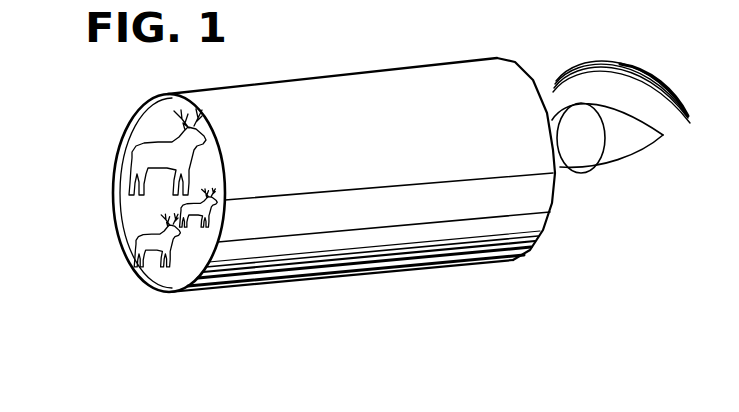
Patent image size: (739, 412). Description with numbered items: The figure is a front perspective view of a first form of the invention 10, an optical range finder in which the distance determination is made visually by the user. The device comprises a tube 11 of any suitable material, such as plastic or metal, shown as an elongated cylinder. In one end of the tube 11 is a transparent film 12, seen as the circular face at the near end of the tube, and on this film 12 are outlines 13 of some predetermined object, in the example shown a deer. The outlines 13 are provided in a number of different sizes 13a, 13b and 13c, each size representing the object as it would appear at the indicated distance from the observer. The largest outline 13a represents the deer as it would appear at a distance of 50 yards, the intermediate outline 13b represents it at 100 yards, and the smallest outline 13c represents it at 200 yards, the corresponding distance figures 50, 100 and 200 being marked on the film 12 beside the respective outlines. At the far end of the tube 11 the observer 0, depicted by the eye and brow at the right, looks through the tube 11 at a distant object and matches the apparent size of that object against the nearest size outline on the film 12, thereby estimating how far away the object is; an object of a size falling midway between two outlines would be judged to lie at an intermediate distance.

The observer 0 is at (573, 64).
The first form of the invention 10 is at (305, 174).
The tube 11 is at (393, 82).
The transparent film 12 is at (128, 222).
The outlines 13 is at (169, 214).
The outline size 13a is at (140, 155).
The outline size 13b is at (155, 267).
The outline size 13c is at (211, 214).
The 50-yard distance indication 50 is at (204, 158).
The 100-yard distance indication 100 is at (183, 273).
The 200-yard distance indication 200 is at (194, 246).